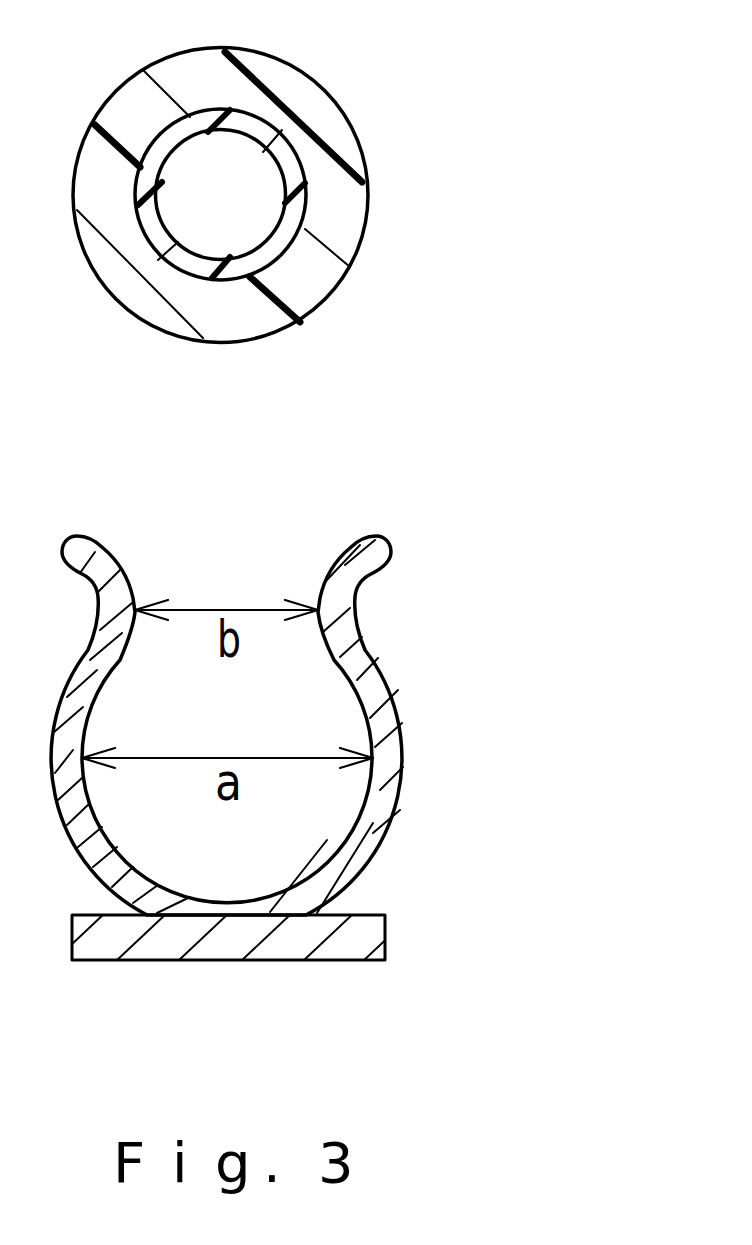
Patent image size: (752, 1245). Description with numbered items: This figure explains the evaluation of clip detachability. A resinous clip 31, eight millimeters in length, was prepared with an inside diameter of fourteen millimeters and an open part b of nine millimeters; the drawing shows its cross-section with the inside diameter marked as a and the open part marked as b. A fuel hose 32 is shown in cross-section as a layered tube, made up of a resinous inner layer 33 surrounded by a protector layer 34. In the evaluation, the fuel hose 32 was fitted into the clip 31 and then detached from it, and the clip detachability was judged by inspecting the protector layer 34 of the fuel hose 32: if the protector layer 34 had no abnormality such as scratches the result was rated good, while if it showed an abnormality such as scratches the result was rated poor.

The resinous clip 31 is at (390, 718).
The fuel hose 32 is at (346, 195).
The resinous inner layer 33 is at (325, 194).
The protector layer 34 is at (323, 118).